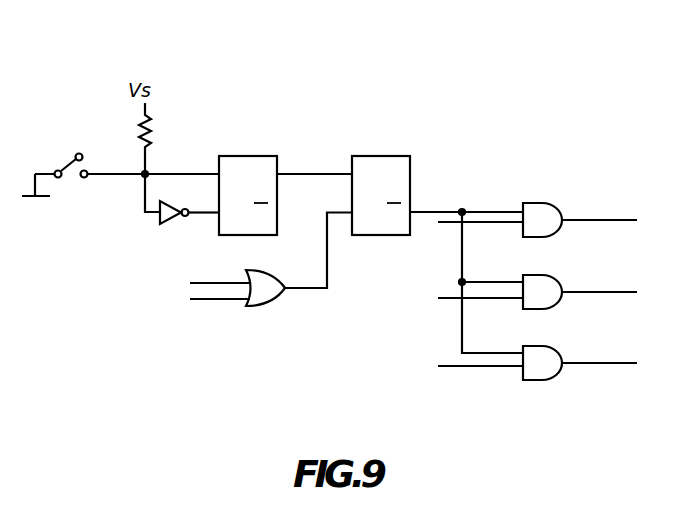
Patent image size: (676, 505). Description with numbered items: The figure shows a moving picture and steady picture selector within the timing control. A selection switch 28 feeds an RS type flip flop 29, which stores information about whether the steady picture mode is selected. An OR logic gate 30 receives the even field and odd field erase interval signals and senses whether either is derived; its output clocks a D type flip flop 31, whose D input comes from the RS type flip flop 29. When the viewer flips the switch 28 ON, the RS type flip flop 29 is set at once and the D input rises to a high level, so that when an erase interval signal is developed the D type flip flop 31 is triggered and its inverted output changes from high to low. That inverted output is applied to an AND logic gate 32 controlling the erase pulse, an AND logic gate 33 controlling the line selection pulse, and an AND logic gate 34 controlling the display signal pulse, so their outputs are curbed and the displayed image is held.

The selection switch 28 is at (63, 168).
The RS type flip flop 29 is at (251, 165).
The OR logic gate 30 is at (260, 298).
The D type flip flop 31 is at (378, 165).
The AND logic gate 32 is at (543, 218).
The AND logic gate 33 is at (547, 290).
The AND logic gate 34 is at (548, 362).